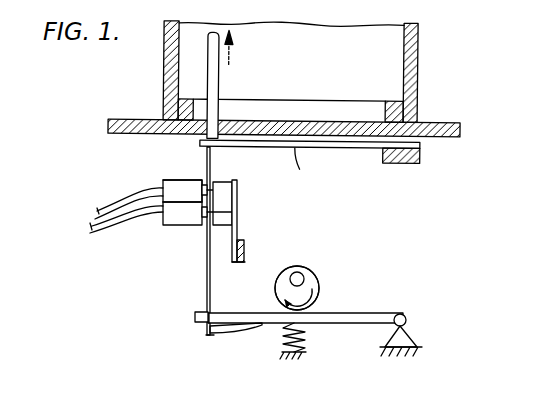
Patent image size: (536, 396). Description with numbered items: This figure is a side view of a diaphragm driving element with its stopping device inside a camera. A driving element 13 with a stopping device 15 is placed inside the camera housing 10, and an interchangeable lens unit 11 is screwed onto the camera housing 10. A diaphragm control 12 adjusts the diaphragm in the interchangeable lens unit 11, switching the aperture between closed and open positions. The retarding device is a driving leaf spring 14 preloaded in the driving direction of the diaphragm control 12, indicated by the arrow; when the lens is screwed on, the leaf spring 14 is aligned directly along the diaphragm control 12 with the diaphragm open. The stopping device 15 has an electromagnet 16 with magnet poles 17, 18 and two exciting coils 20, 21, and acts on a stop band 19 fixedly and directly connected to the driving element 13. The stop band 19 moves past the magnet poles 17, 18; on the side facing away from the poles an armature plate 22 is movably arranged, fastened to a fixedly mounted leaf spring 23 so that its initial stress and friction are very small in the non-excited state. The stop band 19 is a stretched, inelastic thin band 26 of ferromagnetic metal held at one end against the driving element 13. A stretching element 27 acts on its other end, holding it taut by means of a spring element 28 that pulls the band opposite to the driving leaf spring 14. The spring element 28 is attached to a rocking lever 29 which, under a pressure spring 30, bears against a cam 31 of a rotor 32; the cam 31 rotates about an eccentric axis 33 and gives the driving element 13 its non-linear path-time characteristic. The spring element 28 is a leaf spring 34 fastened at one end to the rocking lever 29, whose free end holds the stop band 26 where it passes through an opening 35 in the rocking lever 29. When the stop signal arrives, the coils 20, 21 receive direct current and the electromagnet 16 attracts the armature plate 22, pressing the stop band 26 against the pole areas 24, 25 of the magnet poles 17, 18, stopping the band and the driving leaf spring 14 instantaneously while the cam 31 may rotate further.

The camera housing 10 is at (432, 122).
The interchangeable lens unit 11 is at (392, 50).
The diaphragm control 12 is at (214, 78).
The driving element 13 is at (357, 150).
The driving leaf spring 14 is at (310, 164).
The stopping device 15 is at (185, 235).
The electromagnet 16 is at (150, 192).
The magnet pole 17 is at (203, 184).
The magnet pole 18 is at (206, 222).
The stop band 19 is at (203, 273).
The exciting coil 20 is at (170, 181).
The exciting coil 21 is at (150, 222).
The armature plate 22 is at (225, 201).
The leaf spring 23 is at (238, 242).
The pole area 24 is at (236, 188).
The pole area 25 is at (235, 212).
The thin band 26 is at (205, 291).
The stretching element 27 is at (200, 332).
The spring element 28 is at (225, 332).
The rocking lever 29 is at (367, 325).
The pressure spring 30 is at (305, 333).
The cam 31 is at (319, 299).
The rotor 32 is at (316, 284).
The eccentric axis 33 is at (302, 276).
The leaf spring 34 is at (240, 328).
The opening 35 is at (214, 312).